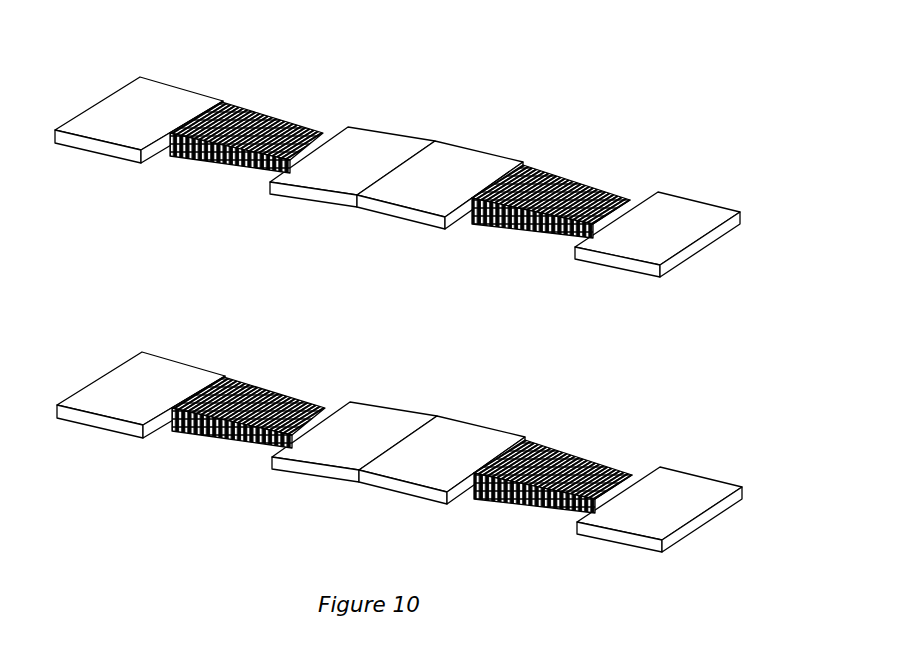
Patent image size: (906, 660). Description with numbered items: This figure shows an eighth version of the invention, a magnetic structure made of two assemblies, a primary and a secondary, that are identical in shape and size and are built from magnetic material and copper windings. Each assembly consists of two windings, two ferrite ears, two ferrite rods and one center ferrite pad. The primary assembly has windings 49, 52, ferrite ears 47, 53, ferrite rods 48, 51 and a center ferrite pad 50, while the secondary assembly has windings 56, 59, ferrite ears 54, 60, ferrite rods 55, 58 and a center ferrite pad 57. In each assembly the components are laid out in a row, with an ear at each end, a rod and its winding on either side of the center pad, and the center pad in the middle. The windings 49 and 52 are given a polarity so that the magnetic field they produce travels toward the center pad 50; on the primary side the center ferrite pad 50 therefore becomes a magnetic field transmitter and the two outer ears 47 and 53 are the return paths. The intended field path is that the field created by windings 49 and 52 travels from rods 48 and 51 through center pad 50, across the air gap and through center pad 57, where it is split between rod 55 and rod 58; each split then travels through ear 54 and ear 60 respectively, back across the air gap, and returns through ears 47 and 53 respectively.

The ferrite ear 47 is at (665, 500).
The ferrite rod 48 is at (627, 478).
The winding 49 is at (560, 468).
The center ferrite pad 50 is at (420, 447).
The ferrite rod 51 is at (322, 418).
The winding 52 is at (253, 392).
The ferrite ear 53 is at (142, 383).
The ferrite ear 54 is at (670, 225).
The ferrite rod 55 is at (628, 205).
The winding 56 is at (558, 183).
The center ferrite pad 57 is at (420, 172).
The ferrite rod 58 is at (325, 143).
The winding 59 is at (258, 117).
The ferrite ear 60 is at (135, 108).